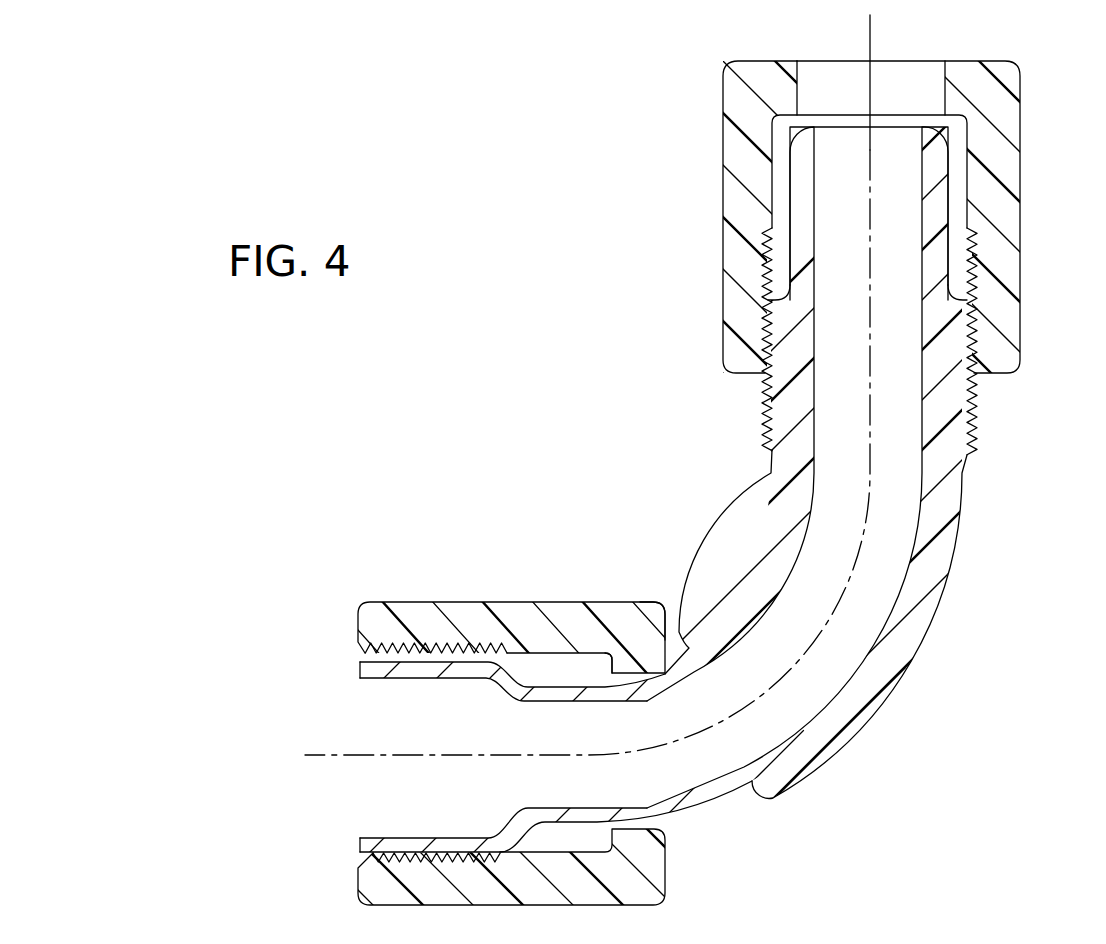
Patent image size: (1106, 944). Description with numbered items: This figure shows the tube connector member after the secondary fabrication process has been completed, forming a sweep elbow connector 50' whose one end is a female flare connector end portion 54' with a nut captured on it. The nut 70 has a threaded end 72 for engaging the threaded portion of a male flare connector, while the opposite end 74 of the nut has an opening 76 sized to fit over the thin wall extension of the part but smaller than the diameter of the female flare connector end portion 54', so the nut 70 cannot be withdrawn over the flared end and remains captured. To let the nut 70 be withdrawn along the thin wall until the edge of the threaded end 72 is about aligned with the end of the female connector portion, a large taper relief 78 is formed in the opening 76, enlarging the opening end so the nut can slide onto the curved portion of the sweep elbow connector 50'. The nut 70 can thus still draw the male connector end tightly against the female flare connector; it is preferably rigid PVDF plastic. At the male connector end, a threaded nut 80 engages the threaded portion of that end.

The sweep elbow connector 50' is at (589, 472).
The female flare connector end portion 54' is at (584, 472).
The nut 70 is at (547, 602).
The threaded end 72 is at (395, 602).
The opposite end of the nut 74 is at (644, 602).
The opening 76 is at (610, 673).
The taper relief 78 is at (650, 824).
The threaded nut 80 is at (720, 303).